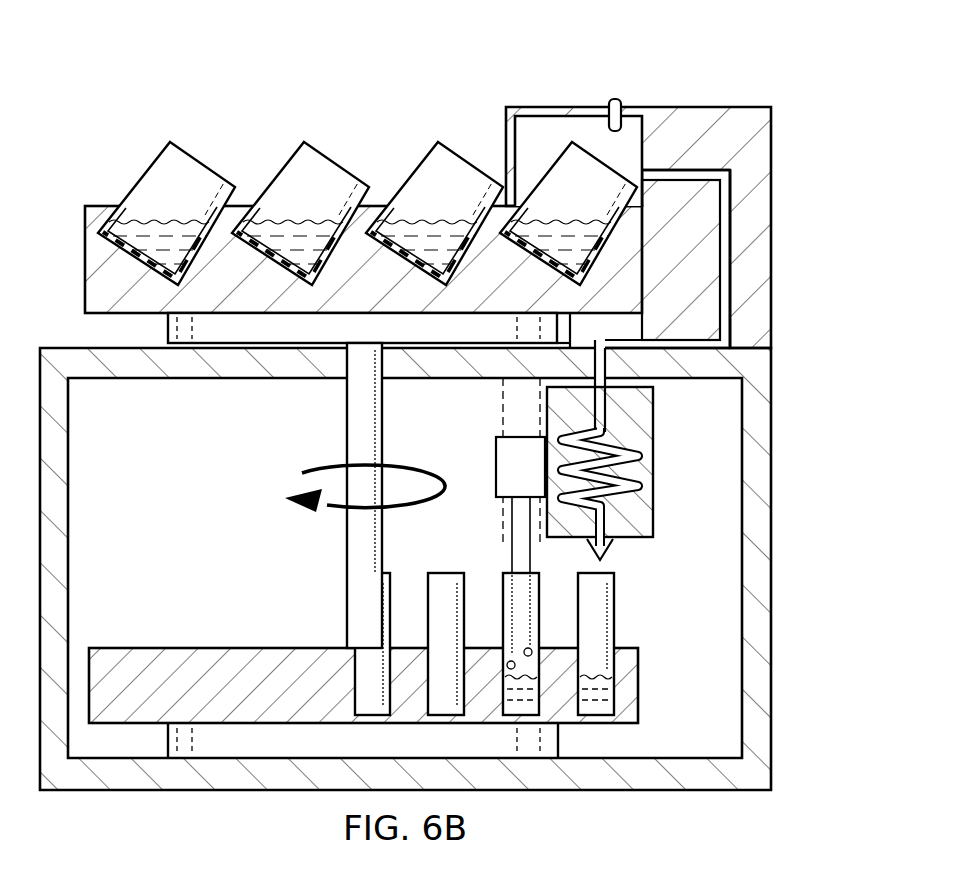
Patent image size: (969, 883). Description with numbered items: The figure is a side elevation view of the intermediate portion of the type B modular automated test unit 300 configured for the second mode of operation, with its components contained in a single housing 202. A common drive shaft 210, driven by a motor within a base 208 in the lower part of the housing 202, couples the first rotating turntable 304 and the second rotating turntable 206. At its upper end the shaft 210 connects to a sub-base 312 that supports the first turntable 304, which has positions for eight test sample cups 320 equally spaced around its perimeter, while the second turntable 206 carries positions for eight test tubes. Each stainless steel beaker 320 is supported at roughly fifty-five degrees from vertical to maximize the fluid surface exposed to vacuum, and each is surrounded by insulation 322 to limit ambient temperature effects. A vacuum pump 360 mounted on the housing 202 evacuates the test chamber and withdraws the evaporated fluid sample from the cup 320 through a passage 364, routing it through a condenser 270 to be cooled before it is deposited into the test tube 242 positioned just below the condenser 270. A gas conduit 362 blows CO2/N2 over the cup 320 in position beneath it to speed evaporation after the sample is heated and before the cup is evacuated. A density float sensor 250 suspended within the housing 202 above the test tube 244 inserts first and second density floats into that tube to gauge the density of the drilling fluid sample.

The housing 202 is at (765, 558).
The second rotating turntable 206 is at (237, 648).
The base 208 is at (560, 736).
The common drive shaft 210 is at (347, 414).
The test tube 242 is at (615, 592).
The test tube 244 is at (540, 611).
The density float sensor 250 is at (496, 464).
The condenser 270 is at (655, 499).
The test unit 300 is at (260, 80).
The first rotating turntable 304 is at (86, 283).
The sub-base 312 is at (236, 330).
The test sample cup 320 is at (154, 174).
The insulation 322 is at (148, 267).
The vacuum pump 360 is at (768, 144).
The gas conduit 362 is at (585, 107).
The passage 364 is at (726, 233).